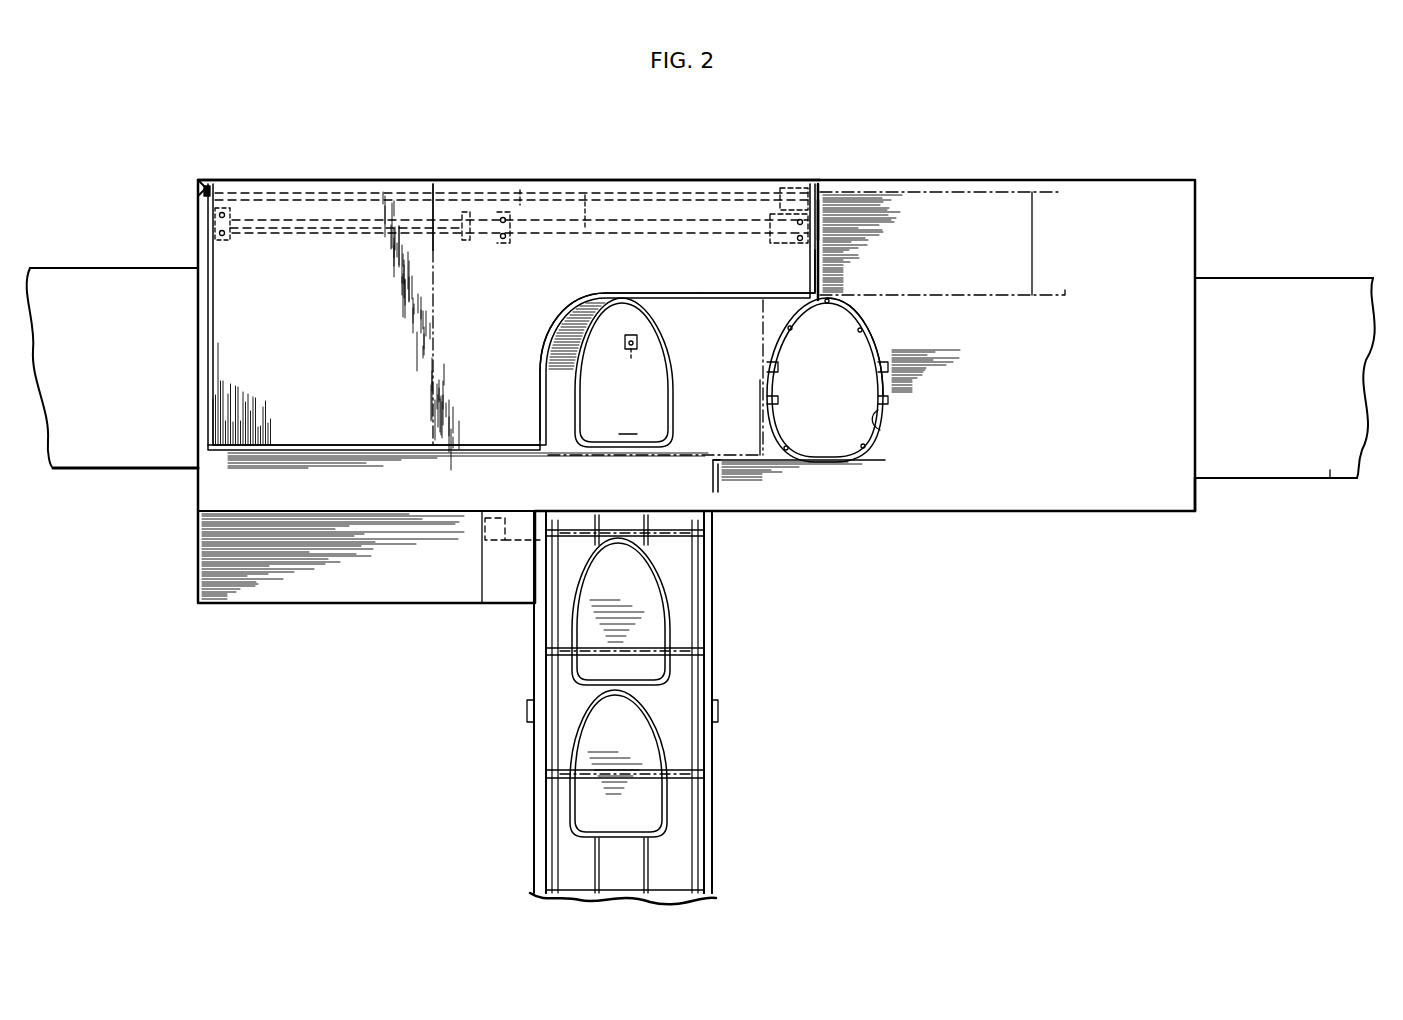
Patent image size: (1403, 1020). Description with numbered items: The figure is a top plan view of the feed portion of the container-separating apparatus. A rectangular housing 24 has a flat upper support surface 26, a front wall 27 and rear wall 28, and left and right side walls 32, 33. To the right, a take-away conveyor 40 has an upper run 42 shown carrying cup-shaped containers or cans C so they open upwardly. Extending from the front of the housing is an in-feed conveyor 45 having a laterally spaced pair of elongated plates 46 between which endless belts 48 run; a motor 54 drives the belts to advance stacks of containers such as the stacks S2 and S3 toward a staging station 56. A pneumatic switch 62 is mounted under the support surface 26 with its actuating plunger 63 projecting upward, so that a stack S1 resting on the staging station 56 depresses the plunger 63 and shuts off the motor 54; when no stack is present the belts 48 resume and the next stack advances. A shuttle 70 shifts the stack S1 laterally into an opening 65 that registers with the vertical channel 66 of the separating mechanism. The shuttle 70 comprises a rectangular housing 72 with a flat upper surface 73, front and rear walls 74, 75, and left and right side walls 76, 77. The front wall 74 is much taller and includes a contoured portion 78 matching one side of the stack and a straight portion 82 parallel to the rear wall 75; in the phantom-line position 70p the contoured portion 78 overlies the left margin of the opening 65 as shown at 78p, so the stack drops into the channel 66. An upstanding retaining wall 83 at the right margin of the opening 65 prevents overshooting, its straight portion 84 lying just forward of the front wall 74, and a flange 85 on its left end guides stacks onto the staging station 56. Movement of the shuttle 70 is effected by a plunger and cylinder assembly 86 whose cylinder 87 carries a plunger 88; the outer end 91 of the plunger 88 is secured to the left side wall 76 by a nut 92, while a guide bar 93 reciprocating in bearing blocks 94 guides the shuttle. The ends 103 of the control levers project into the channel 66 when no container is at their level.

The rectangular housing 24 is at (1200, 232).
The upper support surface 26 is at (1036, 405).
The front wall 27 is at (852, 514).
The rear wall 28 is at (842, 180).
The left side wall 32 is at (197, 335).
The right side wall 33 is at (1200, 496).
The take-away conveyor 40 is at (1318, 275).
The upper run 42 is at (1335, 478).
The in-feed conveyor 45 is at (530, 848).
The elongated plates 46 is at (535, 738).
The endless belts 48 is at (556, 870).
The motor 54 is at (482, 555).
The staging station 56 is at (627, 420).
The pneumatic switch 62 is at (638, 343).
The actuating plunger 63 is at (623, 352).
The opening 65 is at (880, 412).
The channel 66 is at (844, 405).
The shuttle 70 is at (452, 183).
The shuttle phantom line position 70p is at (1040, 215).
The shuttle housing 72 is at (308, 183).
The upper surface 73 is at (366, 338).
The front wall 74 is at (372, 452).
The rear wall 75 is at (385, 183).
The left side wall 76 is at (208, 222).
The right side wall 77 is at (835, 220).
The contoured portion 78 is at (562, 325).
The contoured portion shifted position 78p is at (740, 377).
The straight portion 82 is at (728, 292).
The retaining wall 83 is at (885, 352).
The straight portion 84 is at (780, 462).
The flange 85 is at (712, 478).
The plunger and cylinder assembly 86 is at (527, 195).
The cylinder 87 is at (620, 200).
The plunger 88 is at (330, 195).
The outer end 91 is at (203, 188).
The nut 92 is at (206, 183).
The guide bar 93 is at (335, 232).
The bearing blocks 94 is at (782, 190).
The lever ends 103 is at (878, 368).
The stack of containers S1 is at (678, 390).
The stack of containers S2 is at (668, 560).
The stack of containers S3 is at (660, 720).
The cup-shaped containers C is at (620, 583).